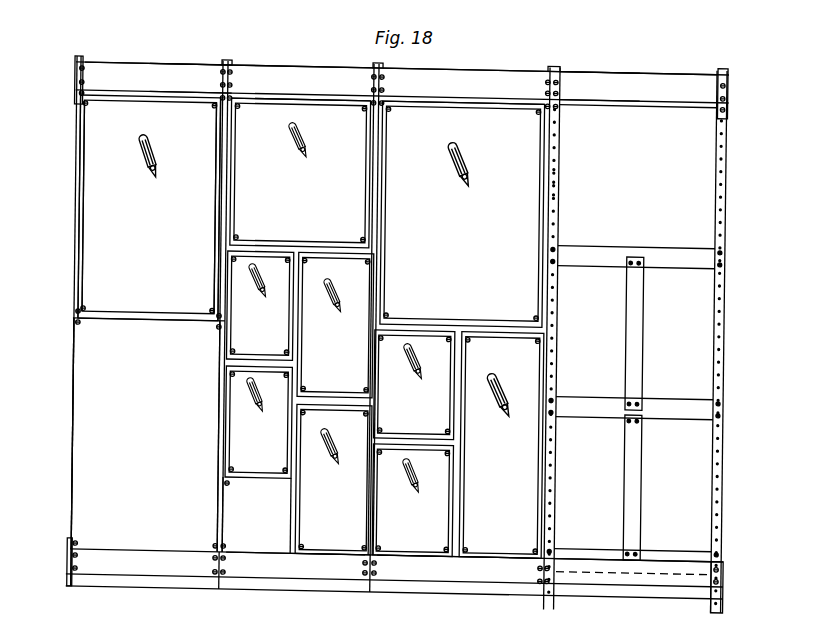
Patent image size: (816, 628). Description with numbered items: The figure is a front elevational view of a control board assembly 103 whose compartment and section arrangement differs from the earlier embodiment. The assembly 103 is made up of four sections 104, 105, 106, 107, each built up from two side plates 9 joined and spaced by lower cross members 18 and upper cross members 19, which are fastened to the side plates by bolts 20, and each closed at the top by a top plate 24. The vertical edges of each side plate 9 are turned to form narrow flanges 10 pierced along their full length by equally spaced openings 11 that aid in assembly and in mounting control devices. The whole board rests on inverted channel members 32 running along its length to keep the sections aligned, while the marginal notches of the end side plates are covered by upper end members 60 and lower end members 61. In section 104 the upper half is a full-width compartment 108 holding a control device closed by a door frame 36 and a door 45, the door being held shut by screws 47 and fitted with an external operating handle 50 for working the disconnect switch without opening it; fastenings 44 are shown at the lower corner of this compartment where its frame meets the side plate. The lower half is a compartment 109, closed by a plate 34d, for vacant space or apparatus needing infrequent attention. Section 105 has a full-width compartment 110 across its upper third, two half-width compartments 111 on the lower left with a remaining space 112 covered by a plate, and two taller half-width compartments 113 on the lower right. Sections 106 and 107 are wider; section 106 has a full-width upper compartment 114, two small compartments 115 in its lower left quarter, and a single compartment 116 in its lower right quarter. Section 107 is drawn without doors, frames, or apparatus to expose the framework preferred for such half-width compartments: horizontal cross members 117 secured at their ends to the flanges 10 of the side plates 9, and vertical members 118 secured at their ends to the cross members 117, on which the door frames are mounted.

The side plate 9 is at (561, 132).
The flange 10 is at (558, 147).
The opening 11 is at (558, 180).
The lower cross member 18 is at (382, 567).
The upper cross member 19 is at (298, 102).
The bolt 20 is at (545, 81).
The top plate 24 is at (190, 63).
The channel member 32 is at (144, 581).
The plate 34d is at (75, 438).
The door frame 36 is at (76, 134).
The bolts 44 is at (77, 325).
The door 45 is at (88, 167).
The screw 47 is at (215, 210).
The external operating handle 50 is at (158, 146).
The upper end member 60 is at (75, 77).
The lower end member 61 is at (70, 560).
The assembly 103 is at (349, 61).
The section 104 is at (152, 62).
The section 105 is at (284, 64).
The section 106 is at (487, 68).
The section 107 is at (640, 74).
The compartment 108 is at (149, 208).
The compartment 109 is at (145, 435).
The compartment 110 is at (300, 173).
The compartment 111 is at (259, 364).
The space 112 is at (256, 515).
The compartment 113 is at (334, 403).
The compartment 114 is at (462, 214).
The compartment 115 is at (413, 443).
The compartment 116 is at (501, 445).
The cross member 117 is at (666, 256).
The vertical member 118 is at (632, 331).